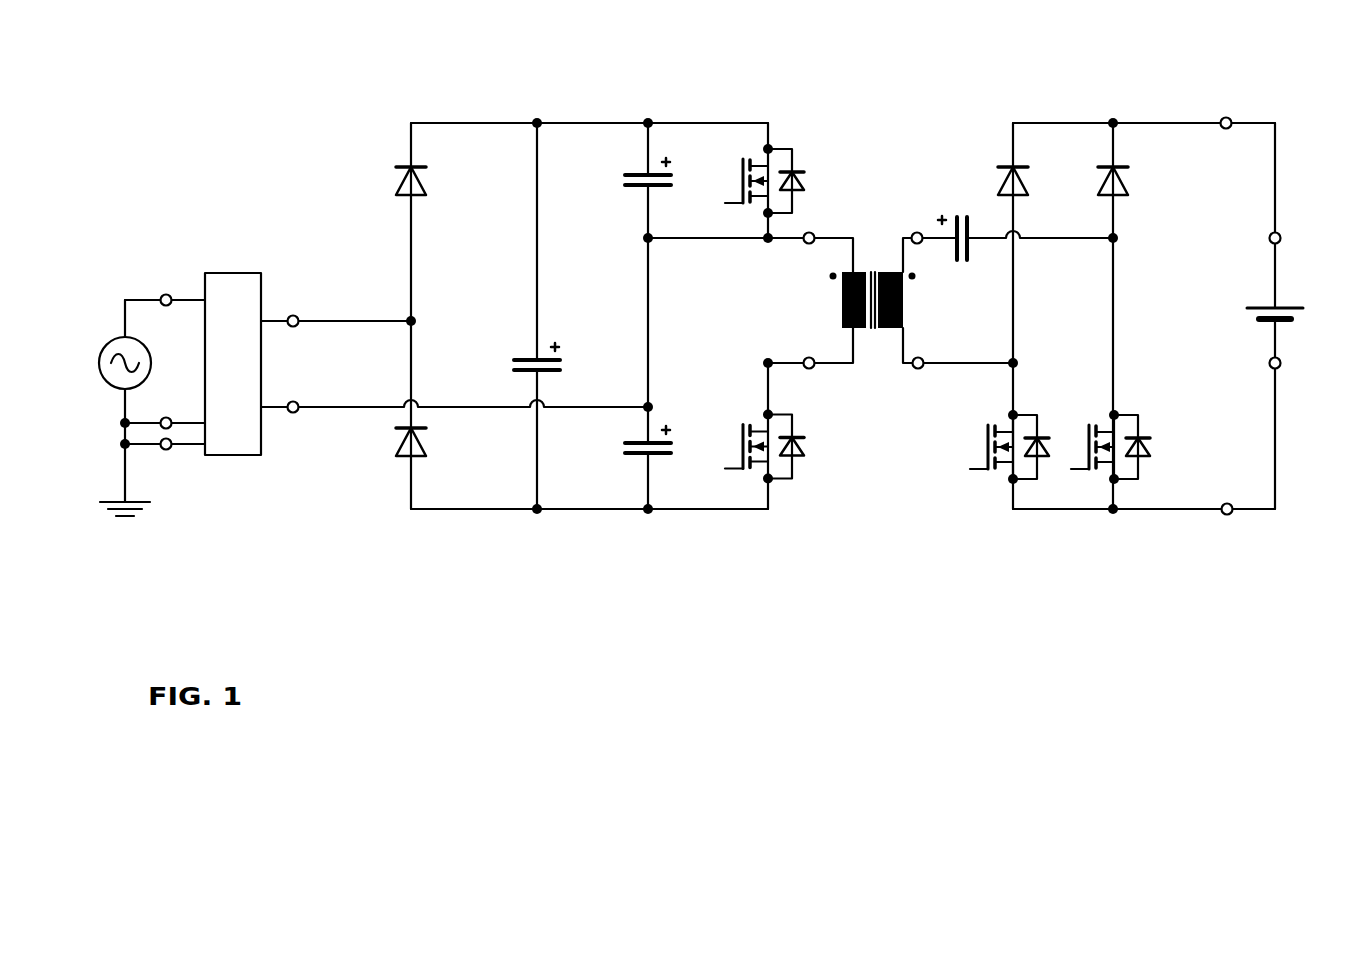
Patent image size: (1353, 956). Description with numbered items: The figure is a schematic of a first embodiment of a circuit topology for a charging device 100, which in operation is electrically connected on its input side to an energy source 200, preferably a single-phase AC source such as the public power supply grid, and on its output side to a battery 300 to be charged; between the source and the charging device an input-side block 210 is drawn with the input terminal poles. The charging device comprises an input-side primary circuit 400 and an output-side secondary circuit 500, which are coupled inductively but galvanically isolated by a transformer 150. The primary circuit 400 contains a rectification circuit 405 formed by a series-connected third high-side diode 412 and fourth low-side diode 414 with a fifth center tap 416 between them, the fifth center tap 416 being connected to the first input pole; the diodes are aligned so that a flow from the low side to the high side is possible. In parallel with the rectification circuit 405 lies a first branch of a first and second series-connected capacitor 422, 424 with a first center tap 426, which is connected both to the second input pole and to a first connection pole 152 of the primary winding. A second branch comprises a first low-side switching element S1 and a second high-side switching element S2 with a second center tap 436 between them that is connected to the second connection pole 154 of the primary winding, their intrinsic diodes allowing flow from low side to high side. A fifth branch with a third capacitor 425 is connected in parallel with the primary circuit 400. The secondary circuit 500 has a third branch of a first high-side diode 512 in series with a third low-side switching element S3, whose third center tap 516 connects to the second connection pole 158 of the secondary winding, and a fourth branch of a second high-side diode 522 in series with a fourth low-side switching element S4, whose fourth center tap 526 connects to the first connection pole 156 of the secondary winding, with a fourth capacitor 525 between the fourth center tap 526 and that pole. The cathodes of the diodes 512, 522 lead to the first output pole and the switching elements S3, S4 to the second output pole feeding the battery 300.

The charging device 100 is at (298, 555).
The energy source 200 is at (126, 555).
The battery 300 is at (1275, 555).
The input filter 210 is at (237, 283).
The rectification circuit 405 is at (392, 128).
The third high-side diode 412 is at (397, 170).
The fourth low-side diode 414 is at (397, 440).
The fifth center tap 416 is at (408, 318).
The primary circuit 400 is at (412, 81).
The first capacitor 422 is at (640, 175).
The second capacitor 424 is at (630, 443).
The third capacitor 425 is at (528, 358).
The first center tap 426 is at (645, 405).
The second center tap 436 is at (765, 360).
The first low-side switching element S1 is at (742, 428).
The second high-side switching element S2 is at (743, 160).
The third low-side switching element S3 is at (968, 460).
The fourth low-side switching element S4 is at (1070, 460).
The transformer 150 is at (840, 385).
The first connection pole of the primary winding 152 is at (812, 234).
The second connection pole of the primary winding 154 is at (811, 370).
The first connection pole of the secondary winding 156 is at (915, 232).
The second connection pole of the secondary winding 158 is at (920, 370).
The secondary circuit 500 is at (1275, 81).
The first high-side diode 512 is at (1027, 172).
The second high-side diode 522 is at (1127, 172).
The third center tap 516 is at (1016, 362).
The fourth center tap 526 is at (1111, 240).
The fourth capacitor 525 is at (966, 225).